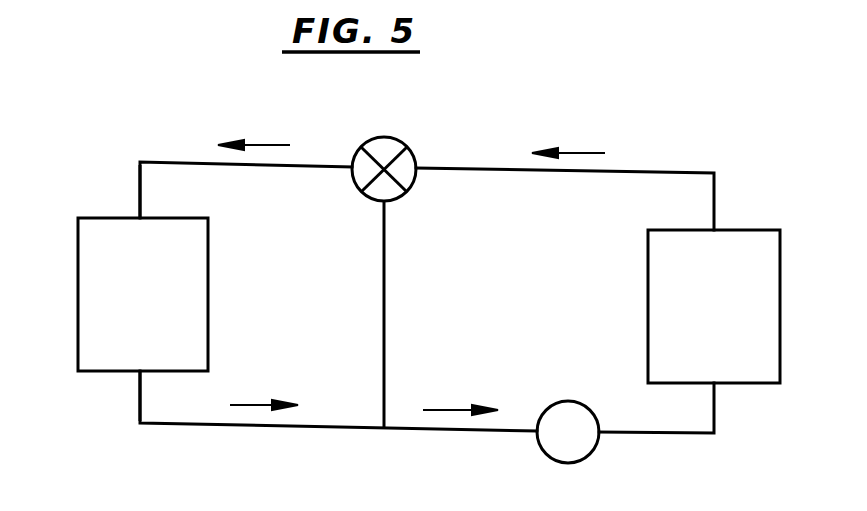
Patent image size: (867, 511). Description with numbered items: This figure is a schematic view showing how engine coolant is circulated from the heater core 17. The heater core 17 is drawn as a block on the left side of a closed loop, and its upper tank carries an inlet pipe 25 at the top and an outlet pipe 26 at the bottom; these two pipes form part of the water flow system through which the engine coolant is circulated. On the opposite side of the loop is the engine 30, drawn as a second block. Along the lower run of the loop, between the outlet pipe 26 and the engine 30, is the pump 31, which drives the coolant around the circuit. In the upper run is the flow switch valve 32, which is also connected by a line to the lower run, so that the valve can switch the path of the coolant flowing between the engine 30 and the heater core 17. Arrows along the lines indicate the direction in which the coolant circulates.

The heater core 17 is at (79, 303).
The inlet pipe 25 is at (138, 216).
The outlet pipe 26 is at (137, 373).
The engine 30 is at (778, 282).
The pump 31 is at (578, 462).
The flow switch valve 32 is at (386, 138).